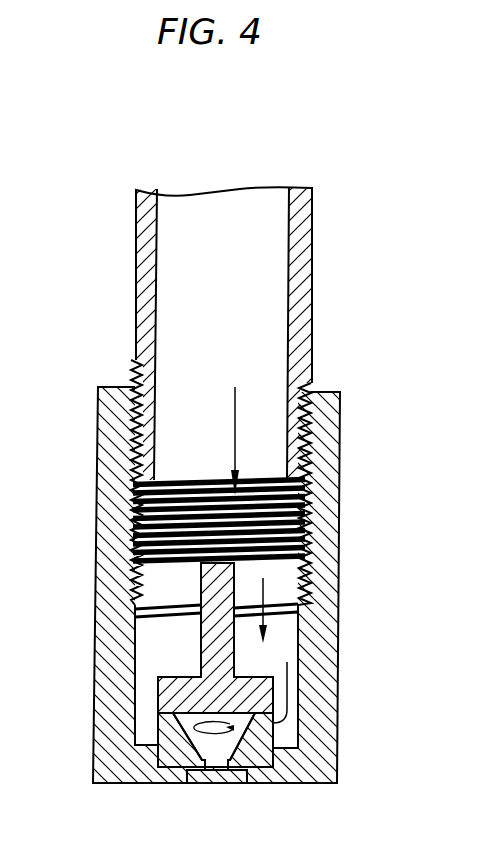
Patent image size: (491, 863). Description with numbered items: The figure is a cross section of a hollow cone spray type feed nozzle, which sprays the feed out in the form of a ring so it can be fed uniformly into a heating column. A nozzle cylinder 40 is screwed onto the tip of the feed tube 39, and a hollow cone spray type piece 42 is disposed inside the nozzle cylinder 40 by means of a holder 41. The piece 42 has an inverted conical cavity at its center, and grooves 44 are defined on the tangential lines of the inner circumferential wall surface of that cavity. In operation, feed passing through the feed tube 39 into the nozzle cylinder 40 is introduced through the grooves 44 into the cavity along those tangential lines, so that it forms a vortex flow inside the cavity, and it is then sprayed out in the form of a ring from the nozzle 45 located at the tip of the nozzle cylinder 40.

The feed tube 39 is at (307, 270).
The nozzle cylinder 40 is at (333, 545).
The holder 41 is at (213, 638).
The hollow cone spray type piece 42 is at (150, 727).
The grooves 44 is at (268, 728).
The nozzle 45 is at (223, 783).